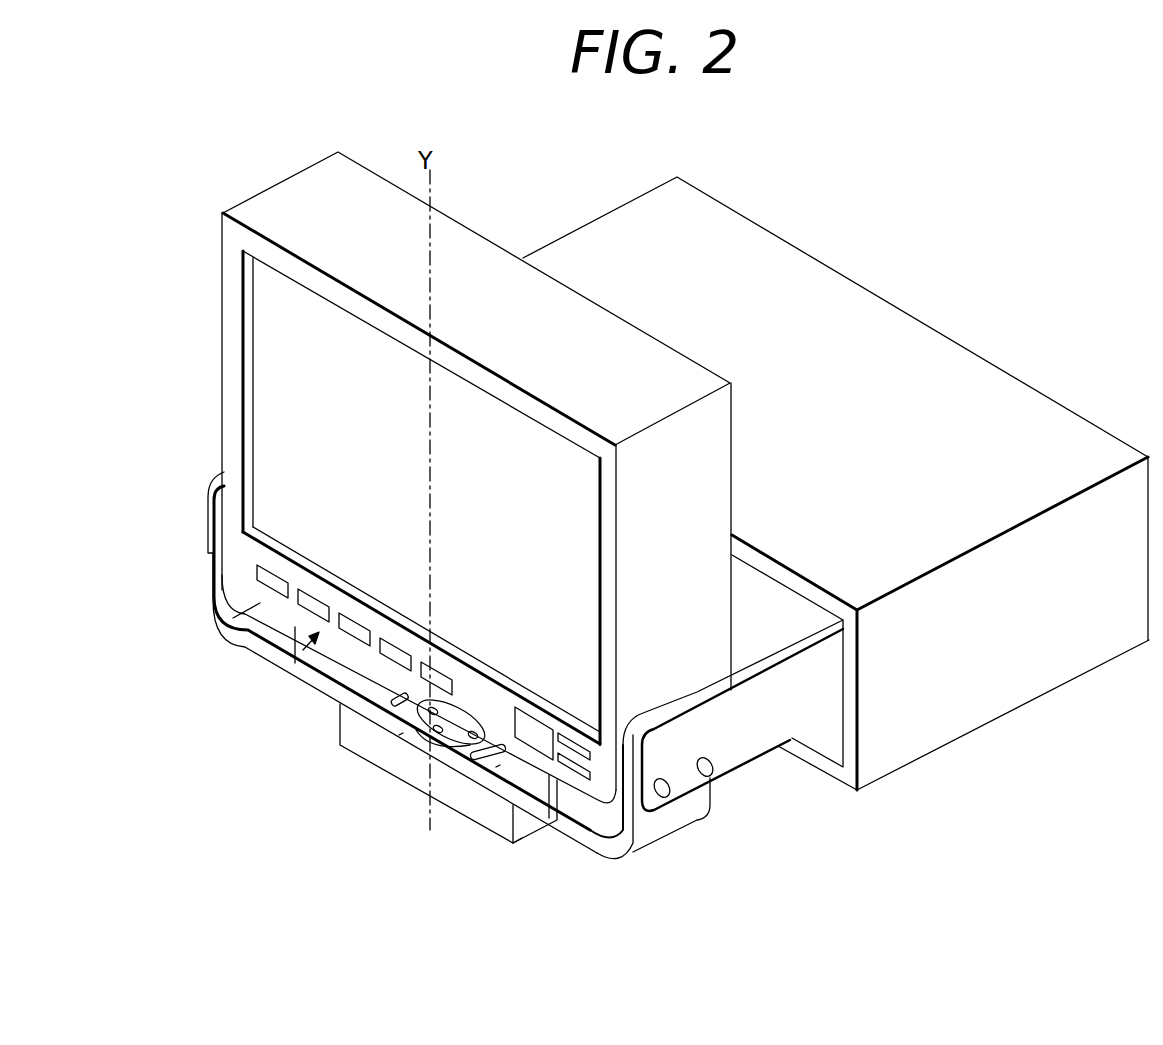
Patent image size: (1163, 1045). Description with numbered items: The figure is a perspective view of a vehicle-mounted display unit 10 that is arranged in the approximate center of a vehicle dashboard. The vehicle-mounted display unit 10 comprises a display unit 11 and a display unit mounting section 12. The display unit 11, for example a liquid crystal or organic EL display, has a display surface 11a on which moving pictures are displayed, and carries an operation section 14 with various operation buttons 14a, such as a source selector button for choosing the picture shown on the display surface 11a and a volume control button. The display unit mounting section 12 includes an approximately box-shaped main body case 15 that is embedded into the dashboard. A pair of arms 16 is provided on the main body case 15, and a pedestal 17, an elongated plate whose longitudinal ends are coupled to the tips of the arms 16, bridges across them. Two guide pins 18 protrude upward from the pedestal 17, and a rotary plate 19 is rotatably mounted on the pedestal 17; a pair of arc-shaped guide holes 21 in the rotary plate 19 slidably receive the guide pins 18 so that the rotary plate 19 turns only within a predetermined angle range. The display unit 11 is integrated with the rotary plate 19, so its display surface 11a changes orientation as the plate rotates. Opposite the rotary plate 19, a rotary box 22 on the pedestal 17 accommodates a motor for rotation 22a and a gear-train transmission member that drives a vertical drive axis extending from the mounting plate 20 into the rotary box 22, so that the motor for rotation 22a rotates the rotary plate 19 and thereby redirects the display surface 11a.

The vehicle-mounted display unit 10 is at (645, 159).
The display unit 11 is at (293, 176).
The display surface 11a is at (268, 344).
The display unit mounting section 12 is at (803, 814).
The operation section 14 is at (282, 664).
The operation buttons 14a is at (430, 670).
The main body case 15 is at (878, 310).
The arms 16 is at (745, 750).
The pedestal 17 is at (680, 815).
The guide pins 18 is at (403, 733).
The rotary plate 19 is at (573, 800).
The mounting plate 20 is at (417, 722).
The guide holes 21 is at (396, 705).
The rotary box 22 is at (527, 833).
The motor for rotation 22a is at (513, 847).